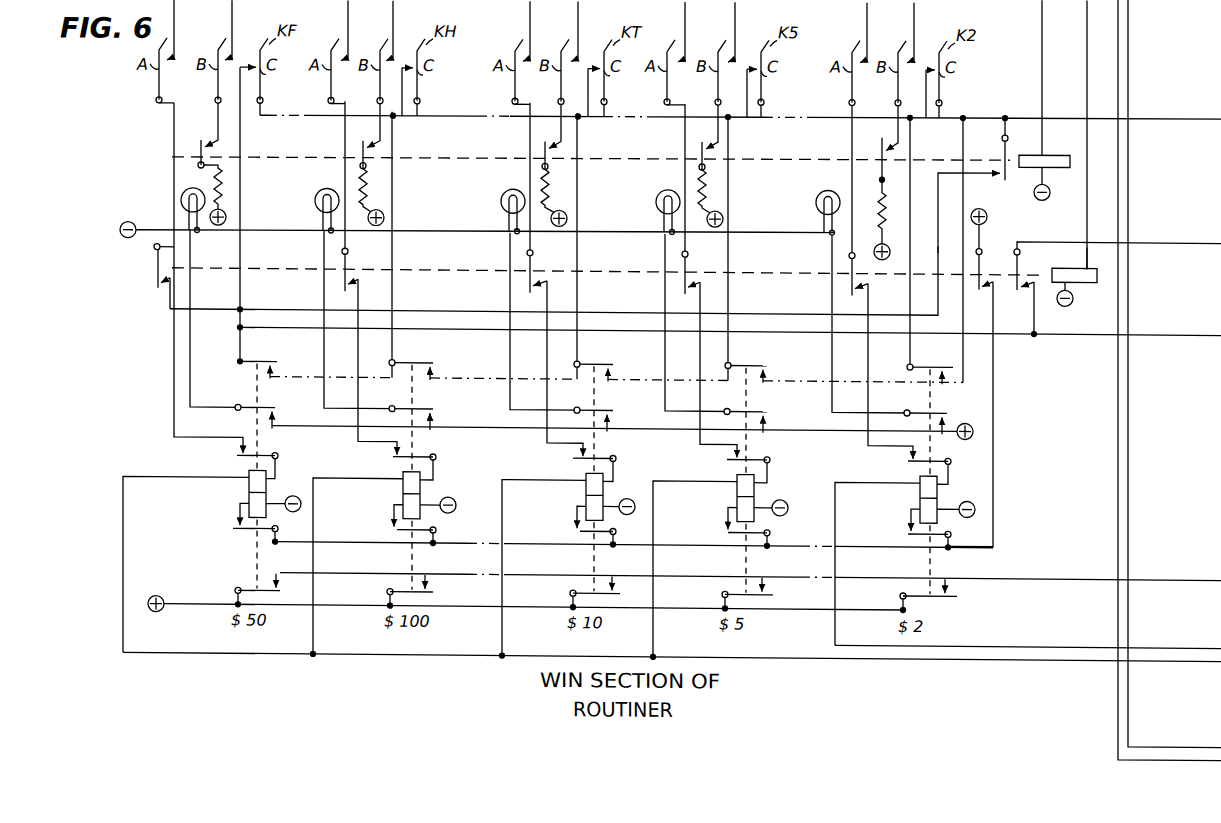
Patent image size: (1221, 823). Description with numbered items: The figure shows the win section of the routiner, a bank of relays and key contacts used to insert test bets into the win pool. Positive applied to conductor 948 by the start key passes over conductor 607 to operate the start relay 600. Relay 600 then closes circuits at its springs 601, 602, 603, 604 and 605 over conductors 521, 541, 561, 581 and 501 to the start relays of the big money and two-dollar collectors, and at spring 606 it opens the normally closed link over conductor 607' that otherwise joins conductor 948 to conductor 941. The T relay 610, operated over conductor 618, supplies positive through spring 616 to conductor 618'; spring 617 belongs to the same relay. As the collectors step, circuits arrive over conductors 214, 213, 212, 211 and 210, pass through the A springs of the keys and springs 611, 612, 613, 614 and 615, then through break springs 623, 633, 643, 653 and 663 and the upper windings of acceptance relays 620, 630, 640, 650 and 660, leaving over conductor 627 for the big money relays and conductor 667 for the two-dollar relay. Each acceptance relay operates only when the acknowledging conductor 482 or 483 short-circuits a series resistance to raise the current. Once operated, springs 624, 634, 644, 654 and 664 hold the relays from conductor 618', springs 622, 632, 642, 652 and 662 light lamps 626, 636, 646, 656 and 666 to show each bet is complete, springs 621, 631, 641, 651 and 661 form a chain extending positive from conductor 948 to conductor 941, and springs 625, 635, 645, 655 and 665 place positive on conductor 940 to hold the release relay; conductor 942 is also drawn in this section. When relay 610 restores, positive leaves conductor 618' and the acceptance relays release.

The conductor 214 is at (174, 28).
The conductor 521 is at (232, 28).
The conductor 213 is at (348, 28).
The conductor 541 is at (393, 28).
The conductor 212 is at (530, 28).
The conductor 561 is at (578, 28).
The conductor 211 is at (685, 28).
The conductor 581 is at (735, 28).
The conductor 210 is at (867, 28).
The conductor 501 is at (914, 28).
The spring 601 is at (200, 141).
The spring 602 is at (349, 146).
The spring 603 is at (544, 141).
The spring 604 is at (701, 141).
The spring 605 is at (879, 138).
The spring 606 is at (1001, 141).
The conductor 607 is at (1025, 100).
The conductor 607' is at (554, 278).
The conductor 618 is at (1068, 134).
The conductor 618' is at (989, 414).
The start relay 600 is at (1072, 156).
The T relay 610 is at (1070, 261).
The spring 611 is at (157, 263).
The spring 612 is at (338, 268).
The spring 613 is at (525, 268).
The spring 614 is at (675, 268).
The spring 615 is at (840, 268).
The spring 616 is at (982, 246).
The spring 617 is at (1031, 236).
The lamp 626 is at (183, 194).
The lamp 636 is at (323, 192).
The lamp 646 is at (513, 192).
The lamp 656 is at (665, 192).
The lamp 666 is at (825, 192).
The acceptance relay 620 is at (249, 499).
The acceptance relay 630 is at (403, 499).
The acceptance relay 640 is at (586, 499).
The acceptance relay 650 is at (734, 499).
The acceptance relay 660 is at (918, 499).
The spring 621 is at (262, 362).
The spring 622 is at (260, 408).
The spring 623 is at (282, 447).
The spring 624 is at (244, 532).
The spring 625 is at (240, 587).
The spring 631 is at (420, 362).
The spring 632 is at (418, 408).
The spring 633 is at (440, 447).
The spring 634 is at (394, 532).
The spring 635 is at (386, 592).
The spring 641 is at (600, 362).
The spring 642 is at (598, 408).
The spring 643 is at (620, 447).
The spring 644 is at (576, 532).
The spring 645 is at (572, 592).
The spring 651 is at (755, 362).
The spring 652 is at (753, 408).
The spring 653 is at (774, 447).
The spring 654 is at (726, 532).
The spring 655 is at (720, 592).
The spring 661 is at (940, 354).
The spring 662 is at (934, 408).
The spring 663 is at (955, 447).
The spring 664 is at (910, 532).
The spring 665 is at (904, 592).
The conductor 941 is at (1215, 114).
The conductor 942 is at (1213, 232).
The conductor 948 is at (1215, 328).
The conductor 940 is at (1213, 571).
The conductor 667 is at (1213, 640).
The conductor 627 is at (1210, 678).
The big money acknowledging conductor 482 is at (1213, 740).
The $2.00 acknowledging conductor 483 is at (1118, 745).